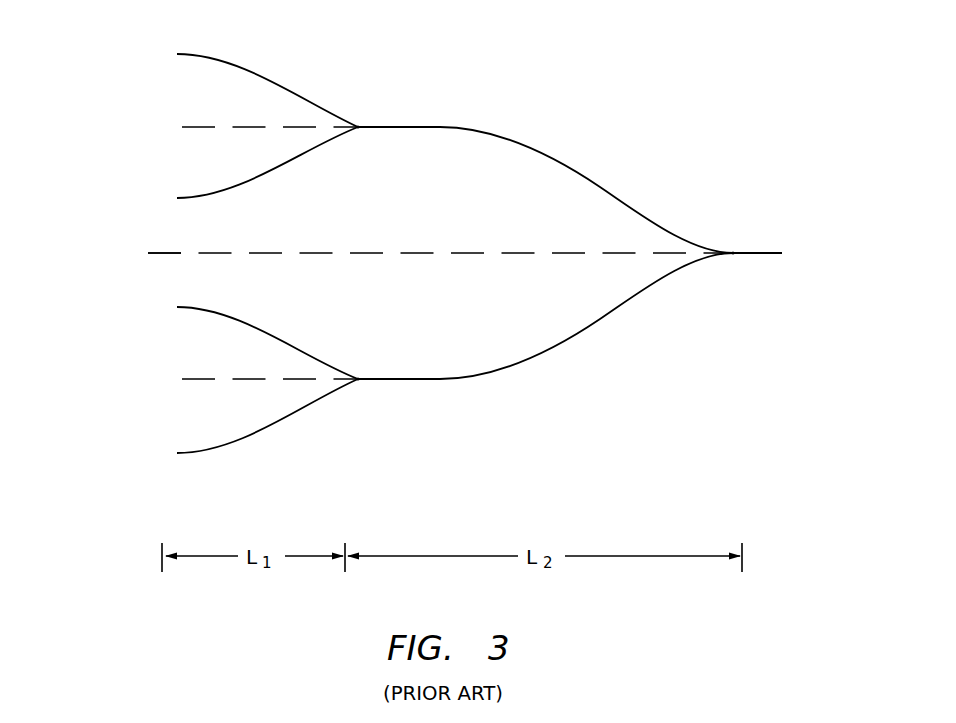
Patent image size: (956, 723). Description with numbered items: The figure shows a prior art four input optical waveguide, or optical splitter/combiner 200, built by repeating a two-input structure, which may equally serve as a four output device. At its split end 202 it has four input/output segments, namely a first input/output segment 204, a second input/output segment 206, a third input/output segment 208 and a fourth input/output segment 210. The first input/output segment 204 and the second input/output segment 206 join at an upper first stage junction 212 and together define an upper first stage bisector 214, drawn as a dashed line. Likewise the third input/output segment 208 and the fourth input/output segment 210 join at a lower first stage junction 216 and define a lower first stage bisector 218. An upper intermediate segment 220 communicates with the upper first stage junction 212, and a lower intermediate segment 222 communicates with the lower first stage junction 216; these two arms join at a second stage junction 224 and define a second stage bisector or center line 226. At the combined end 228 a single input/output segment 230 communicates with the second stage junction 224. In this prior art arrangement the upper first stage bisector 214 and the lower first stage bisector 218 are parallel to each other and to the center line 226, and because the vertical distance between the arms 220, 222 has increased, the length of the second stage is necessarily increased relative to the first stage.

The four input optical splitter/combiner 200 is at (673, 101).
The split end 202 is at (119, 253).
The first input/output segment 204 is at (227, 60).
The second input/output segment 206 is at (257, 182).
The third input/output segment 208 is at (273, 335).
The fourth input/output segment 210 is at (257, 435).
The upper first stage junction 212 is at (359, 125).
The upper first stage bisector 214 is at (202, 125).
The lower first stage junction 216 is at (355, 382).
The lower first stage bisector 218 is at (202, 379).
The upper intermediate segment 220 is at (592, 178).
The lower intermediate segment 222 is at (542, 355).
The second stage junction 224 is at (718, 250).
The second stage bisector or center line 226 is at (202, 253).
The combined end 228 is at (826, 253).
The single input/output segment 230 is at (747, 253).